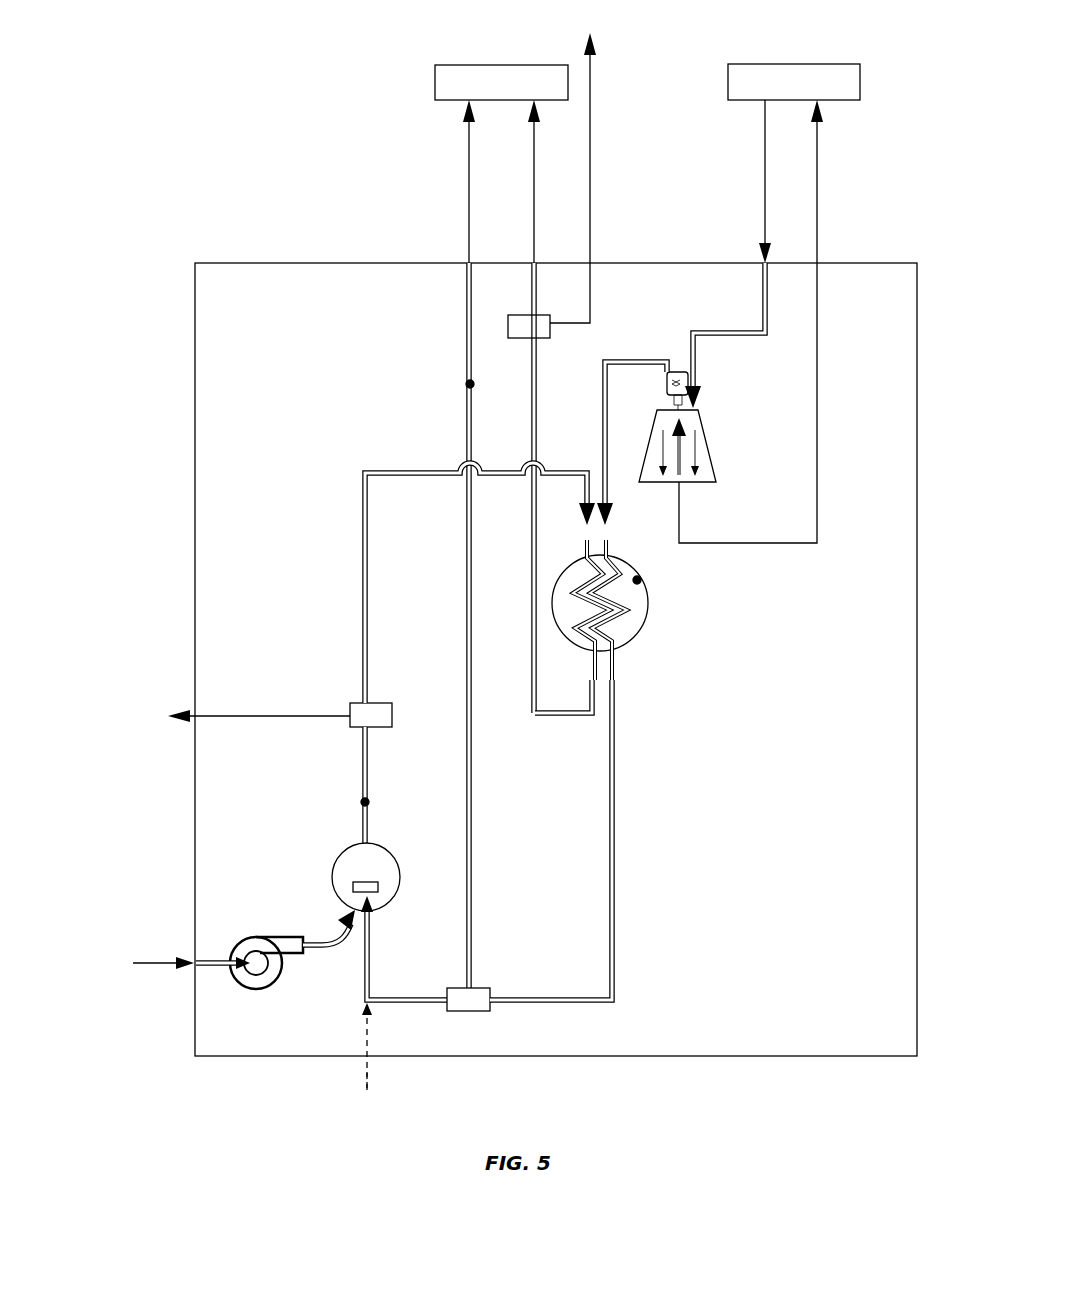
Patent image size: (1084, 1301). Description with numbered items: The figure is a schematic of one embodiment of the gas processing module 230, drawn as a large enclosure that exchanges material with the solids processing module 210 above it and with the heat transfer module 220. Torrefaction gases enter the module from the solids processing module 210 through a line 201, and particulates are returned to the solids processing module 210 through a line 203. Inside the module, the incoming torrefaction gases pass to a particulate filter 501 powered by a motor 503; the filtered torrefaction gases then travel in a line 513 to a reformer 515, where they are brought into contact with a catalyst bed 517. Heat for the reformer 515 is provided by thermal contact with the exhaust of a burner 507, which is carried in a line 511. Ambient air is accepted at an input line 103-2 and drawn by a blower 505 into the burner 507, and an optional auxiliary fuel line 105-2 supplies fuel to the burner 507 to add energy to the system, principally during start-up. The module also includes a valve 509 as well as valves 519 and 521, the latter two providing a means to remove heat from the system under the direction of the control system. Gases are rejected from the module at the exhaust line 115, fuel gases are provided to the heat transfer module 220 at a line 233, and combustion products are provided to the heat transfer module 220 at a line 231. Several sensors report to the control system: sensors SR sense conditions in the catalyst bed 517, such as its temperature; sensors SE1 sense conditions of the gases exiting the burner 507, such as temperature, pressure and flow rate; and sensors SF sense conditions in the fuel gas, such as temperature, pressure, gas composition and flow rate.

The gas processing module 230 is at (236, 214).
The heat transfer module 220 is at (501, 82).
The solids processing module 210 is at (794, 82).
The fuel gases line 233 is at (467, 262).
The combustion products line 231 is at (537, 185).
The exhaust line 115 is at (592, 134).
The particulates line 203 is at (760, 258).
The torrefaction gases line 201 is at (822, 136).
The valve 521 is at (542, 315).
The motor 503 is at (677, 370).
The particulate filter 501 is at (712, 440).
The filtered torrefaction gas line 513 is at (602, 400).
The burner exhaust line 511 is at (362, 588).
The valve 519 is at (384, 728).
The burner 507 is at (341, 860).
The blower 505 is at (258, 936).
The ambient air input 103-2 is at (162, 968).
The auxiliary fuel input 105-2 is at (363, 1083).
The valve 509 is at (482, 1012).
The reformer 515 is at (644, 630).
The catalyst bed 517 is at (640, 600).
The sensors SR is at (641, 580).
The sensors SE1 is at (361, 802).
The sensors SF is at (466, 384).